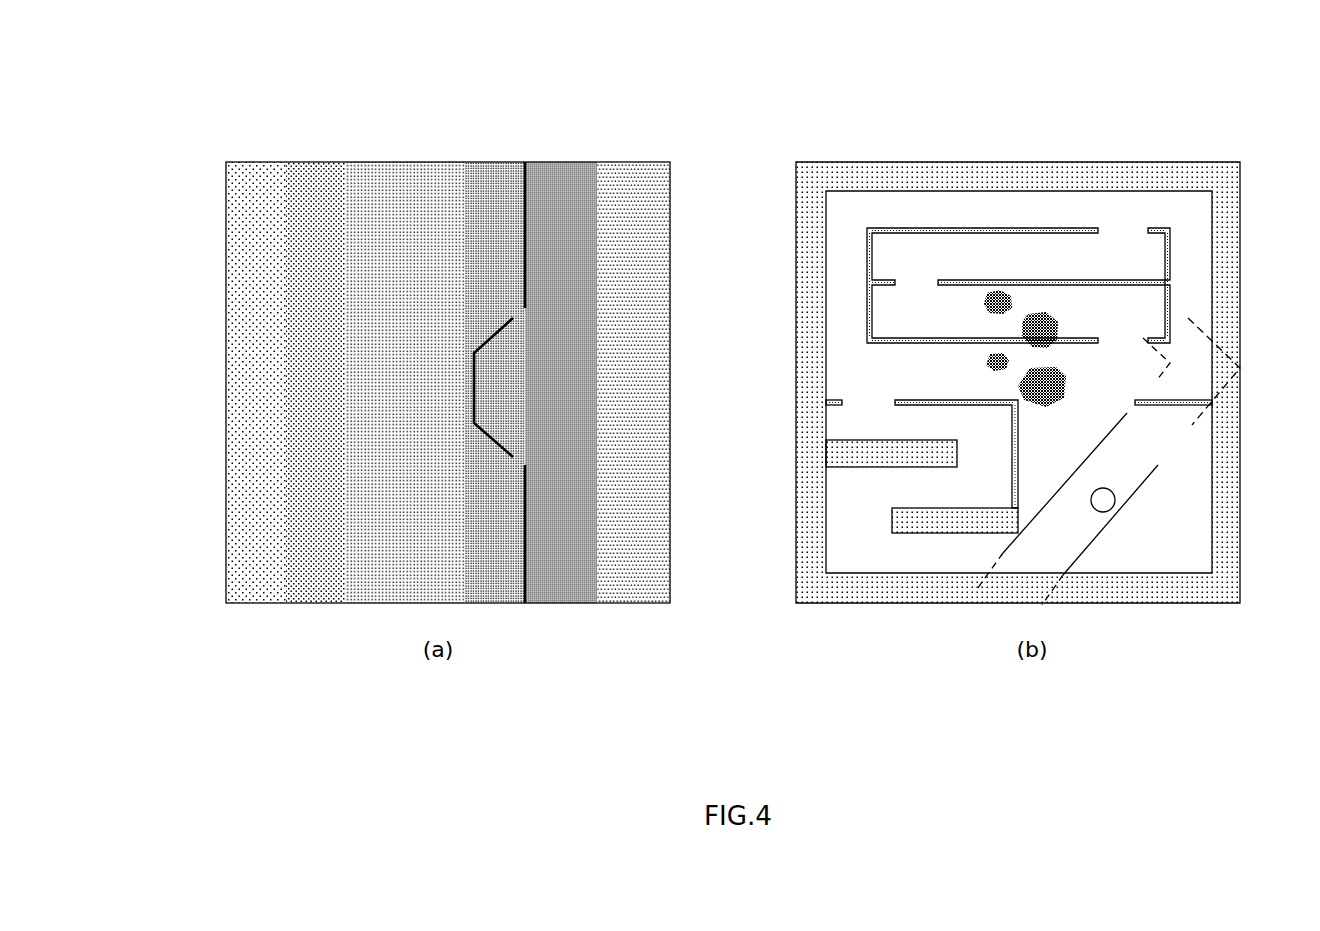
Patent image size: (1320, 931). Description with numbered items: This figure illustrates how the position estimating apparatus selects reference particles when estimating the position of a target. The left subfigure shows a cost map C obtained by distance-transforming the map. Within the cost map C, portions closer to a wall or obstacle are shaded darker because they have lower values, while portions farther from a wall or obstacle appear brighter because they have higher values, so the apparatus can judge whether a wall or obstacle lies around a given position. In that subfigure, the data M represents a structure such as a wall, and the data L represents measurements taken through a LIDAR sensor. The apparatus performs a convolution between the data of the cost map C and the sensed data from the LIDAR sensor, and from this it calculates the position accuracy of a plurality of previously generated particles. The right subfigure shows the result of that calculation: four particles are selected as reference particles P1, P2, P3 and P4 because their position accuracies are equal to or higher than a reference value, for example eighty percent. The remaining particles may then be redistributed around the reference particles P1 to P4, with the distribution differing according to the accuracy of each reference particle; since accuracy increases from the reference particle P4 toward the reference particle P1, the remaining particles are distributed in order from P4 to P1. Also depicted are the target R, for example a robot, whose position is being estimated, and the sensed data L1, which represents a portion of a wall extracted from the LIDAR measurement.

The cost map C is at (411, 162).
The data M is at (530, 203).
The data measured through a LIDAR sensor L is at (474, 380).
The reference particle P1 is at (1050, 378).
The reference particle P2 is at (1043, 318).
The reference particle P3 is at (999, 292).
The reference particle P4 is at (990, 360).
The sensed data L1 is at (1214, 350).
The target R is at (1103, 512).